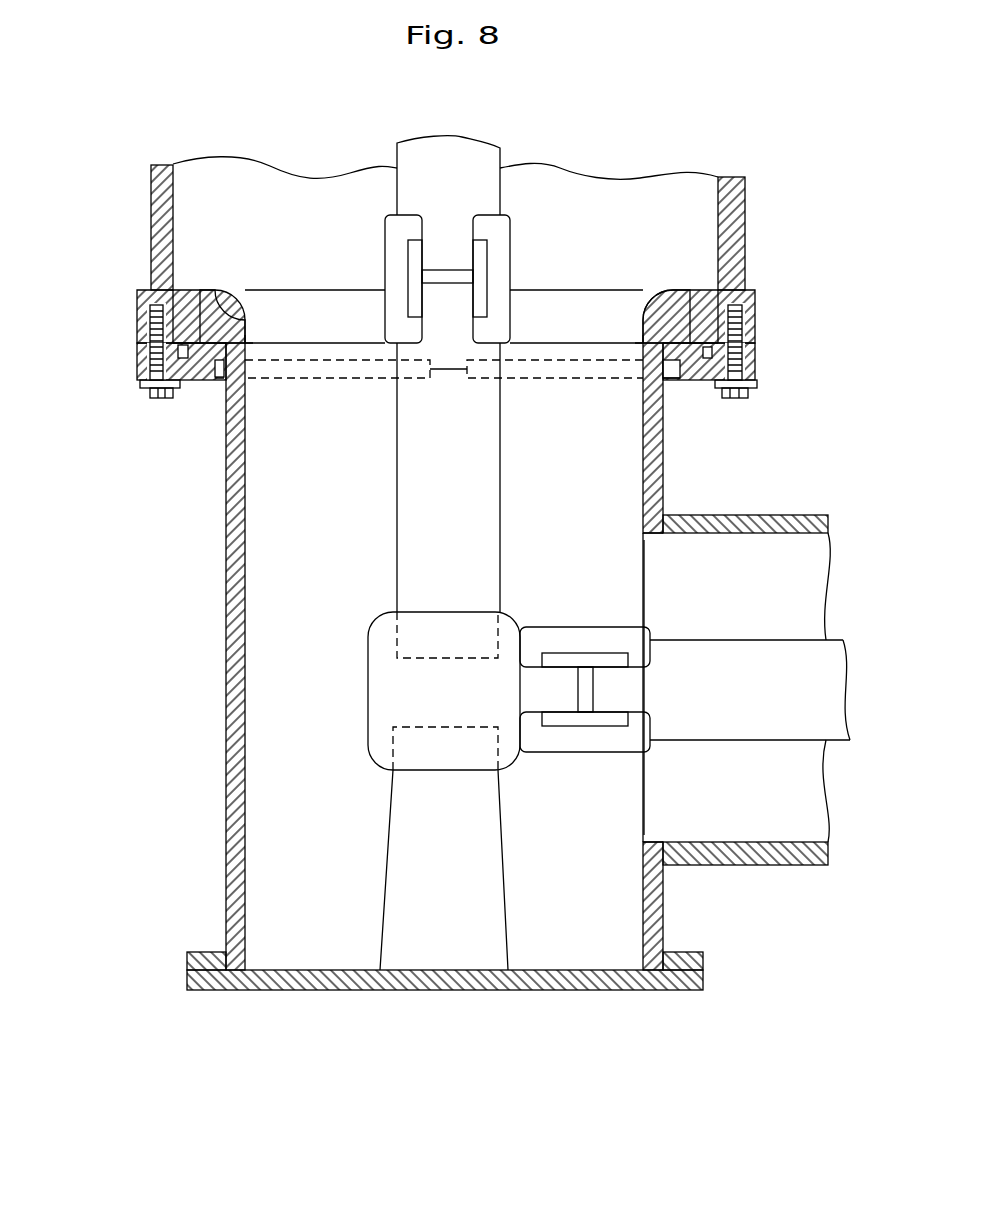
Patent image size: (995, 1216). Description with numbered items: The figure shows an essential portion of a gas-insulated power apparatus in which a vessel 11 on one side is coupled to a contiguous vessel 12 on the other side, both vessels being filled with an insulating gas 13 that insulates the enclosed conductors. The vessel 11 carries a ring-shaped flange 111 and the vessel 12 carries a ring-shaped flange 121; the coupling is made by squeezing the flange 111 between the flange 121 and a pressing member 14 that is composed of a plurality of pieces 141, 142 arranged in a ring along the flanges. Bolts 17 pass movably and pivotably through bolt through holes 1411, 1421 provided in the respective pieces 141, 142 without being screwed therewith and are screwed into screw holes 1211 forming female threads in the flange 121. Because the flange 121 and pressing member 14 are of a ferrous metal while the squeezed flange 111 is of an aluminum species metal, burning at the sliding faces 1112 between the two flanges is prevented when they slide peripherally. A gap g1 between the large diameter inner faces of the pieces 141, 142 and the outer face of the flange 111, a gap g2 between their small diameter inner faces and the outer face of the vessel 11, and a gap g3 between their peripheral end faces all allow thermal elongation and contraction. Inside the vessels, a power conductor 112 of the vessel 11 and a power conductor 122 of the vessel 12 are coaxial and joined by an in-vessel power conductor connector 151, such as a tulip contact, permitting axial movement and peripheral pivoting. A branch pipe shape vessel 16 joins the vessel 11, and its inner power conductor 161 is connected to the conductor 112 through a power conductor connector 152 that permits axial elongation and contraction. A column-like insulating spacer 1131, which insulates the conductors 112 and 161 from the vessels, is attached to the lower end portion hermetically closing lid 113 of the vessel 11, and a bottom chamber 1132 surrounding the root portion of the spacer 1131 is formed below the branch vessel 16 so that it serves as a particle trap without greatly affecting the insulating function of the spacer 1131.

The vessel on one side 11 is at (226, 763).
The vessel on other side 12 is at (743, 178).
The insulating gas 13 is at (626, 190).
The pressing member 14 is at (200, 380).
The branch pipe shape vessel 16 is at (683, 867).
The bolt 17 is at (150, 397).
The flange 111 is at (215, 332).
The power conductor 112 is at (500, 530).
The lower end portion hermetically closing lid 113 is at (540, 993).
The flange 121 is at (184, 335).
The power conductor 122 is at (397, 146).
The pressing member piece 141 is at (518, 375).
The pressing member piece 142 is at (370, 380).
The in-vessel power conductor connector 151 is at (500, 222).
The power conductor connector at inside of branch pipe shape vessel 152 is at (560, 752).
The power conductor at inside of branch pipe shape vessel 161 is at (847, 743).
The sliding faces 1112 is at (247, 342).
The column-like insulating spacer 1131 is at (500, 945).
The bottom chamber 1132 is at (590, 948).
The screw hole 1211 is at (140, 324).
The bolt through hole 1411 is at (757, 360).
The bolt through hole 1421 is at (140, 359).
The gap g1 is at (192, 343).
The gap g2 is at (228, 370).
The gap g3 is at (445, 372).